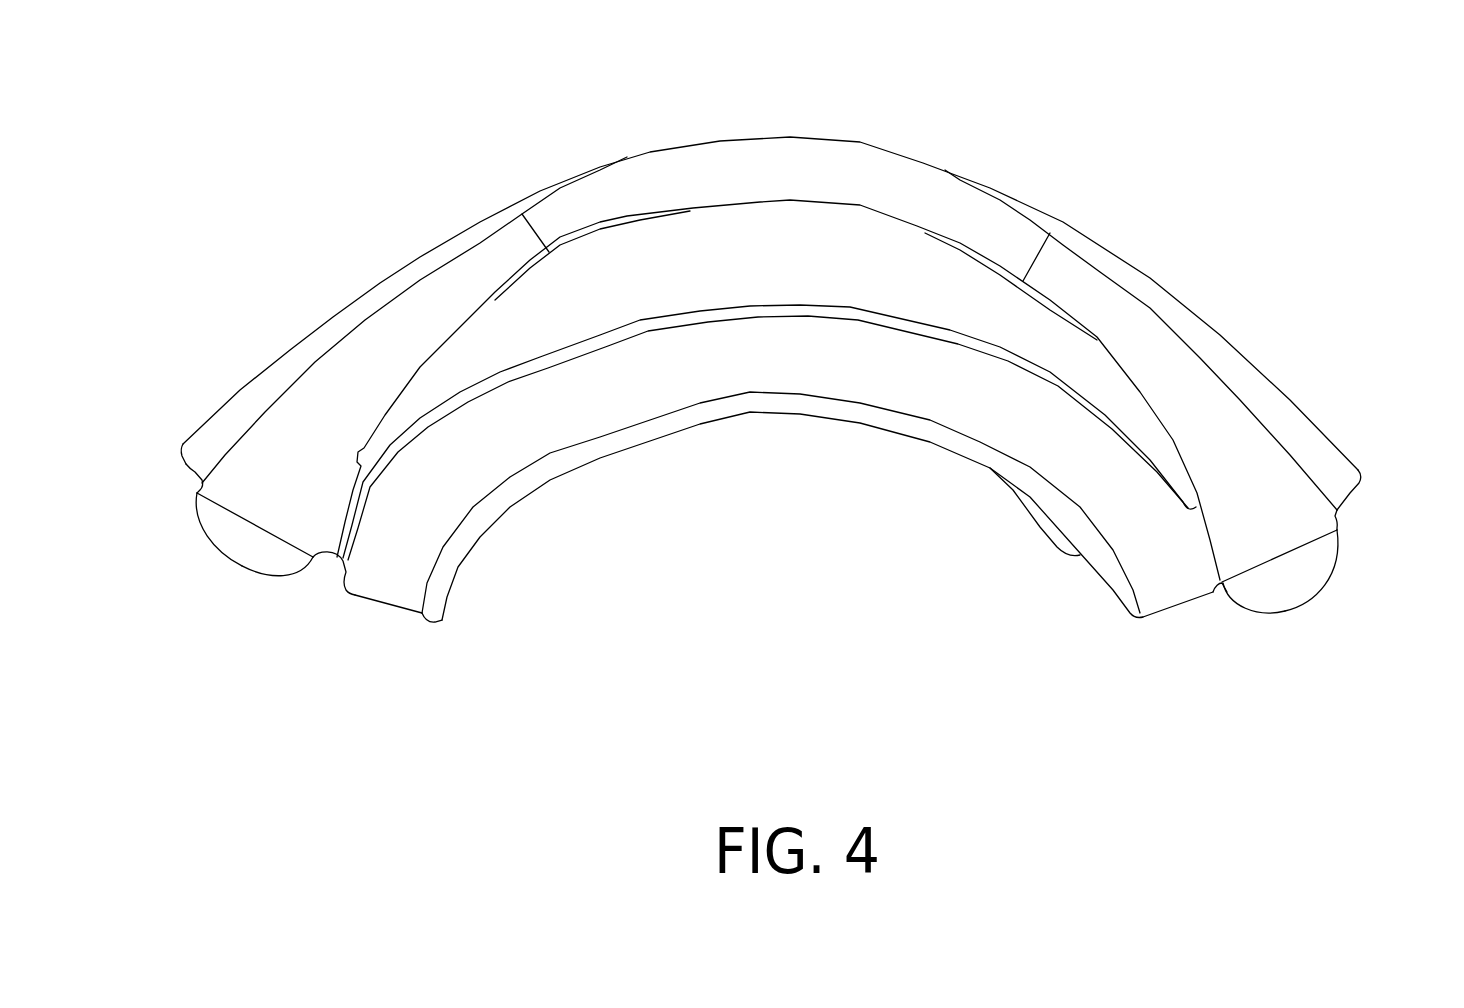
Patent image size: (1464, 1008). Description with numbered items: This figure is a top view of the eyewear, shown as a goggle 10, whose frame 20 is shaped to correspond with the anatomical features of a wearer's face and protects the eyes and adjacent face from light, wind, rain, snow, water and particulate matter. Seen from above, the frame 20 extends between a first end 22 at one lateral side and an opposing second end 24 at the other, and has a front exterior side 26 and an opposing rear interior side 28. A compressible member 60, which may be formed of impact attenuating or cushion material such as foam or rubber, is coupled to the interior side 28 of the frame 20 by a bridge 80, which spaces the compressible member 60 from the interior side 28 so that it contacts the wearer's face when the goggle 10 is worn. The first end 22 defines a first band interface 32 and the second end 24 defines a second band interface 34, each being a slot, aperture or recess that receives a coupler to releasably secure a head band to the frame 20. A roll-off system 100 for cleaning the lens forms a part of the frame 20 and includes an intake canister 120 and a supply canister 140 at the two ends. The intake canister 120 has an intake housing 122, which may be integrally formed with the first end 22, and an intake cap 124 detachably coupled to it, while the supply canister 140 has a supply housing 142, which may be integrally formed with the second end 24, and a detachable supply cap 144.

The goggle 10 is at (187, 167).
The frame 20 is at (922, 185).
The first end 22 is at (1370, 416).
The second end 24 is at (174, 410).
The exterior side 26 is at (789, 130).
The interior side 28 is at (774, 208).
The first band interface 32 is at (1350, 497).
The second band interface 34 is at (173, 484).
The compressible member 60 is at (762, 388).
The bridge 80 is at (575, 283).
The roll-off system 100 is at (1339, 558).
The intake canister 120 is at (1267, 588).
The intake housing 122 is at (1258, 535).
The intake cap 124 is at (1297, 580).
The supply canister 140 is at (238, 536).
The supply housing 142 is at (308, 525).
The supply cap 144 is at (253, 555).